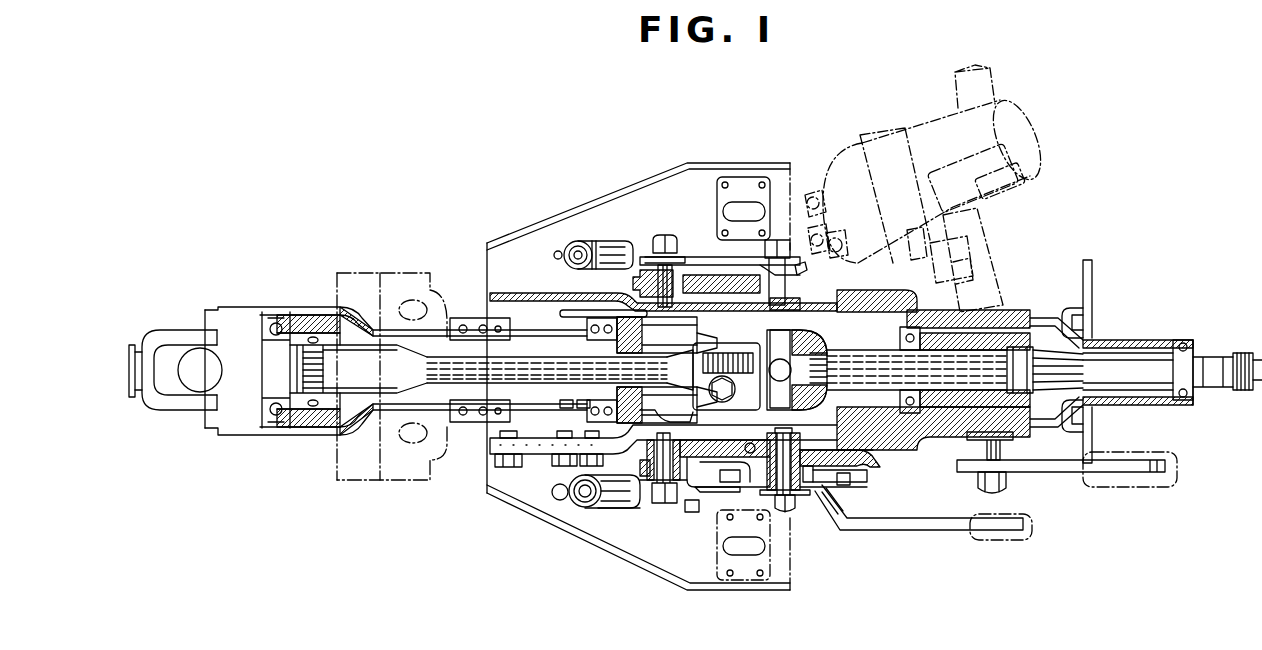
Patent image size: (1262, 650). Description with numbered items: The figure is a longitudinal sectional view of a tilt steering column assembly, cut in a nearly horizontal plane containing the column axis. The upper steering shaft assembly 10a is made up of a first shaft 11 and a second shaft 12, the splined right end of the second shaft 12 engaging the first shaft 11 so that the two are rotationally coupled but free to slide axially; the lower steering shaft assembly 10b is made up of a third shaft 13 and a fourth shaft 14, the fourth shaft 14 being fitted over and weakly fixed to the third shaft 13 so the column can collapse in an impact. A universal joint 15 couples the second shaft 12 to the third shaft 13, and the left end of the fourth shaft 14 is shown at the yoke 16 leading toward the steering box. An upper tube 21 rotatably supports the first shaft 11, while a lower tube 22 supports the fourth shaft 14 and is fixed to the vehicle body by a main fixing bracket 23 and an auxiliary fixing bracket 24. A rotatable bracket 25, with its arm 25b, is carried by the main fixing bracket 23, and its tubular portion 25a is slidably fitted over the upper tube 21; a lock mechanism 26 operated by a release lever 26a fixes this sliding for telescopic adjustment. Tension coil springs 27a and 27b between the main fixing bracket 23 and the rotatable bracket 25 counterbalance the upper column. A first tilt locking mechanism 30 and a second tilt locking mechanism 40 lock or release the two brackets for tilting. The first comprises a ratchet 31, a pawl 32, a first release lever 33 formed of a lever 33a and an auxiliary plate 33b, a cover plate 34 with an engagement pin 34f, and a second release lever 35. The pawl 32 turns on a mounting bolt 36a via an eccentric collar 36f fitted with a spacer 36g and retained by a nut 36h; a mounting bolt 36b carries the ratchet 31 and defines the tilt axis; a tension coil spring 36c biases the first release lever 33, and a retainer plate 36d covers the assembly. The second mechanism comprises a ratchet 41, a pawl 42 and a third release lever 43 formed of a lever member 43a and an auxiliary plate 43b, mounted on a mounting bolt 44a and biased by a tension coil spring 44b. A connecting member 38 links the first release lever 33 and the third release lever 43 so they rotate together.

The upper steering shaft assembly 10a is at (1132, 352).
The lower steering shaft assembly 10b is at (478, 396).
The first shaft 11 is at (1140, 380).
The second shaft 12 is at (870, 362).
The third shaft 13 is at (481, 351).
The fourth shaft 14 is at (362, 348).
The universal joint 15 is at (759, 368).
The yoke 16 is at (135, 411).
The upper tube 21 is at (1049, 328).
The lower tube 22 is at (402, 312).
The main fixing bracket 23 is at (512, 291).
The auxiliary fixing bracket 24 is at (373, 469).
The rotatable bracket 25 is at (893, 445).
The tubular portion 25a is at (927, 428).
The upper arm of upper bracket 25b is at (864, 433).
The lock mechanism 26 is at (1008, 478).
The release lever 26a is at (1130, 474).
The tension coil spring 27a is at (640, 467).
The tension coil spring 27b is at (587, 310).
The first tilt locking mechanism 30 is at (869, 475).
The ratchet 31 is at (819, 448).
The pawl 32 is at (596, 491).
The first release lever 33 is at (873, 530).
The lever 33a is at (957, 530).
The auxiliary plate 33b is at (742, 433).
The cover plate 34 is at (840, 448).
The engagement pin 34f is at (842, 485).
The second release lever 35 is at (757, 488).
The mounting bolt 36a is at (655, 503).
The mounting bolt 36b is at (801, 500).
The tension coil spring 36c is at (607, 510).
The retainer plate 36d is at (730, 482).
The eccentric collar 36f is at (673, 418).
The spacer 36g is at (713, 500).
The nut 36h is at (690, 514).
The connecting member 38 is at (720, 533).
The second tilt locking mechanism 40 is at (688, 255).
The ratchet 41 is at (850, 278).
The pawl 42 is at (636, 287).
The third release lever 43 is at (782, 245).
The lever member 43a is at (710, 273).
The auxiliary plate 43b is at (735, 293).
The mounting bolt 44a is at (785, 304).
The tension coil spring 44b is at (608, 246).